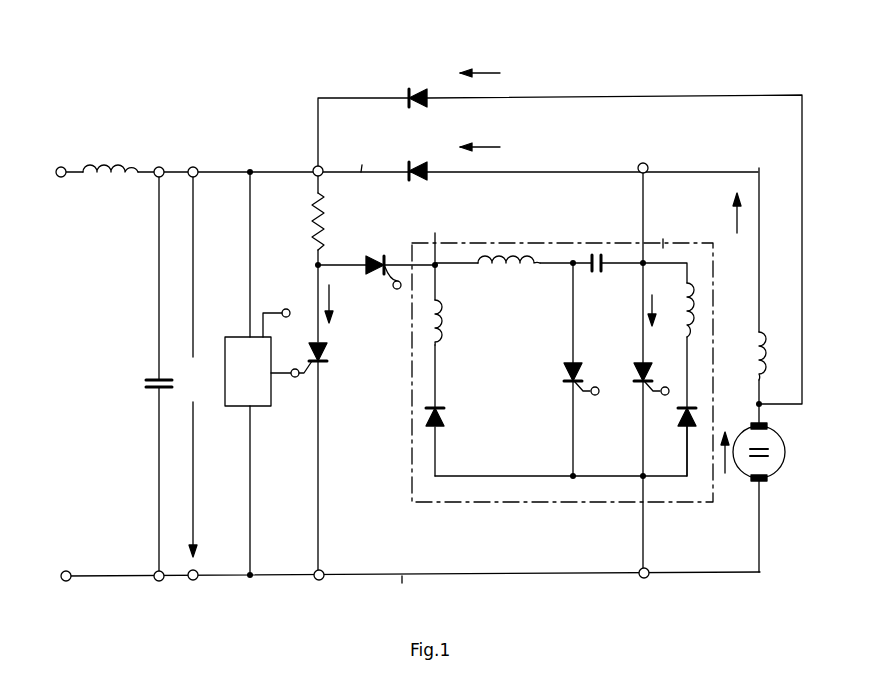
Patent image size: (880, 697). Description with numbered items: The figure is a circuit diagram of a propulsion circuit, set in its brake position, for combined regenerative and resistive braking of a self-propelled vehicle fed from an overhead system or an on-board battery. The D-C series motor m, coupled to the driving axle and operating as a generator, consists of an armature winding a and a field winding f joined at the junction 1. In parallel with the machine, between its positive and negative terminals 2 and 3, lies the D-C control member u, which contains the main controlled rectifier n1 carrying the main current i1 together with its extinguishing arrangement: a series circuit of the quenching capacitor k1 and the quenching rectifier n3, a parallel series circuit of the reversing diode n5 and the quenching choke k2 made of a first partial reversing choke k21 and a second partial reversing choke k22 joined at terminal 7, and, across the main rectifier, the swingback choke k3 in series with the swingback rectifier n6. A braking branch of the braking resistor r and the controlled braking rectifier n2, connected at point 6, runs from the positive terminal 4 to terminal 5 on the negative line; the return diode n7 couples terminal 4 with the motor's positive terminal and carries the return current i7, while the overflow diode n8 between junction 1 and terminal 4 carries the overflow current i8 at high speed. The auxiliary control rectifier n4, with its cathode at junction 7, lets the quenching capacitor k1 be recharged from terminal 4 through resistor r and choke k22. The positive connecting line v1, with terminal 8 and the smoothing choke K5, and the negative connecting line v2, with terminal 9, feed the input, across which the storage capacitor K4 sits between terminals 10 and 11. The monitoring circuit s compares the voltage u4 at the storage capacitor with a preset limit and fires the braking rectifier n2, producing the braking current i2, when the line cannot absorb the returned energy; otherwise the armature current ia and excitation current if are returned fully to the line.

The junction 1 is at (764, 406).
The positive terminal 2 is at (647, 173).
The negative terminal 3 is at (648, 569).
The positive terminal of braking branch 4 is at (321, 167).
The terminal of braking branch 5 is at (323, 570).
The connection point 6 is at (321, 263).
The terminal 7 is at (437, 240).
The terminal 8 is at (54, 162).
The terminal 9 is at (60, 584).
The terminal 10 is at (157, 159).
The terminal 11 is at (162, 579).
The smoothing choke K5 is at (110, 174).
The storage capacitor K4 is at (148, 378).
The braking resistor r is at (312, 212).
The monitoring circuit s is at (230, 337).
The controlled braking rectifier n2 is at (328, 359).
The auxiliary control rectifier n4 is at (373, 257).
The return diode n7 is at (414, 161).
The overflow diode n8 is at (414, 88).
The main controlled rectifier n1 is at (653, 371).
The quenching rectifier n3 is at (565, 372).
The reversing diode n5 is at (447, 421).
The swingback rectifier n6 is at (683, 423).
The quenching capacitor k1 is at (596, 255).
The quenching choke k2 is at (448, 302).
The first partial reversing choke k21 is at (445, 343).
The second partial reversing choke k22 is at (511, 271).
The swingback choke k3 is at (687, 330).
The field winding f is at (767, 352).
The D-C motor m is at (781, 429).
The armature winding a is at (776, 471).
The D-C control member u is at (663, 233).
The actual voltage u4 is at (189, 373).
The positive connecting line v1 is at (364, 157).
The negative connecting line v2 is at (401, 589).
The main current i1 is at (659, 305).
The braking branch current i2 is at (338, 304).
The return current i7 is at (480, 131).
The overflow current i8 is at (480, 59).
The excitation current if is at (728, 213).
The armature current ia is at (723, 438).